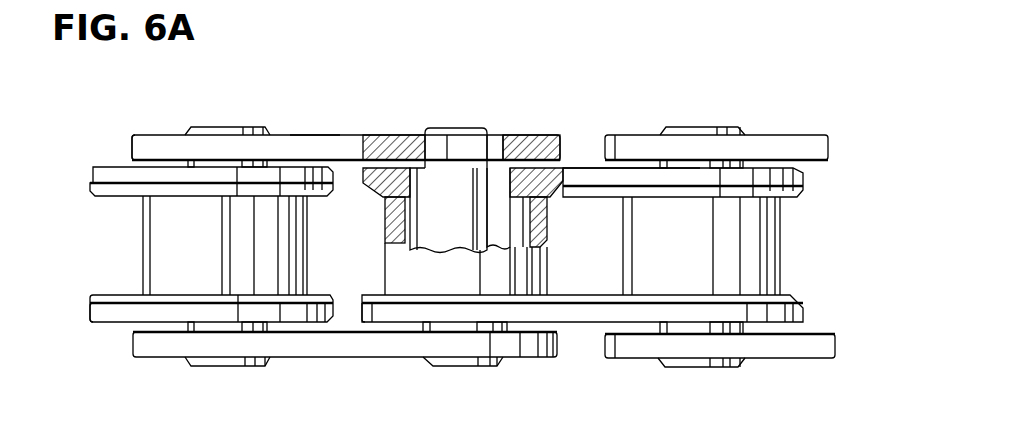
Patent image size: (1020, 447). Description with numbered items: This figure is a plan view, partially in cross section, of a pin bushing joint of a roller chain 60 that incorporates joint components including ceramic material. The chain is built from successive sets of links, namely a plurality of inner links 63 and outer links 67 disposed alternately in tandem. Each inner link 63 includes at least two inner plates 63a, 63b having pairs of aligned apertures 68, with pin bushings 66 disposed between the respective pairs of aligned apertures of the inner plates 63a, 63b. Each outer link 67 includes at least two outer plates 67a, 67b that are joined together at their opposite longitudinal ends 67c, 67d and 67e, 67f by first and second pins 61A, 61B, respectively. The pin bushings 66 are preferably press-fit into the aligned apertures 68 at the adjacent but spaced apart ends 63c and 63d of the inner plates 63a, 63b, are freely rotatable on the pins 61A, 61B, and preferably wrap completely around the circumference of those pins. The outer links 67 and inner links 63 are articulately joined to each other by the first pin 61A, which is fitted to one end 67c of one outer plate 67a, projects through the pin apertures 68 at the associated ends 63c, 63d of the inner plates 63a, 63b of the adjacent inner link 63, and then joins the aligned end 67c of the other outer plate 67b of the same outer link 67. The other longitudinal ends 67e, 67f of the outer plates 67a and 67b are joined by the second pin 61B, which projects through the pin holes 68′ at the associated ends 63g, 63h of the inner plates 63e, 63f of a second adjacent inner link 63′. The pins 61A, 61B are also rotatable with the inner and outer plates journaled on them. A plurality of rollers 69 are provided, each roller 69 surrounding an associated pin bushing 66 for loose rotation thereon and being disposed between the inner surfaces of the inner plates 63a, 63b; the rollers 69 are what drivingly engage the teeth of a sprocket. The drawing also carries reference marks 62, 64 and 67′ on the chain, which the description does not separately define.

The roller chain 60 is at (748, 103).
The first pin 61A is at (447, 145).
The second pin 61B is at (208, 128).
The outer link 62 is at (823, 128).
The inner link 63 is at (593, 168).
The inner plate 63a is at (578, 168).
The inner plate 63b is at (578, 318).
The end of inner plate 63c is at (380, 197).
The end of inner plate 63d is at (358, 268).
The inner plate 63e is at (110, 170).
The inner plate 63f is at (103, 313).
The end of inner plate 63g is at (160, 177).
The end of inner plate 63h is at (173, 313).
The second adjacent inner link 63′ is at (122, 323).
The inner link 64 is at (613, 203).
The pin bushing 66 is at (418, 165).
The outer link 67 is at (285, 135).
The outer plate 67a is at (310, 135).
The outer plate 67b is at (352, 345).
The longitudinal end of outer plate 67c is at (570, 136).
The longitudinal end of outer plate 67d is at (548, 358).
The longitudinal end of outer plate 67e is at (167, 136).
The longitudinal end of outer plate 67f is at (175, 358).
The outer link plate 67′ is at (793, 350).
The pin aperture 68 is at (490, 147).
The pin hole 68′ is at (267, 323).
The roller 69 is at (307, 238).